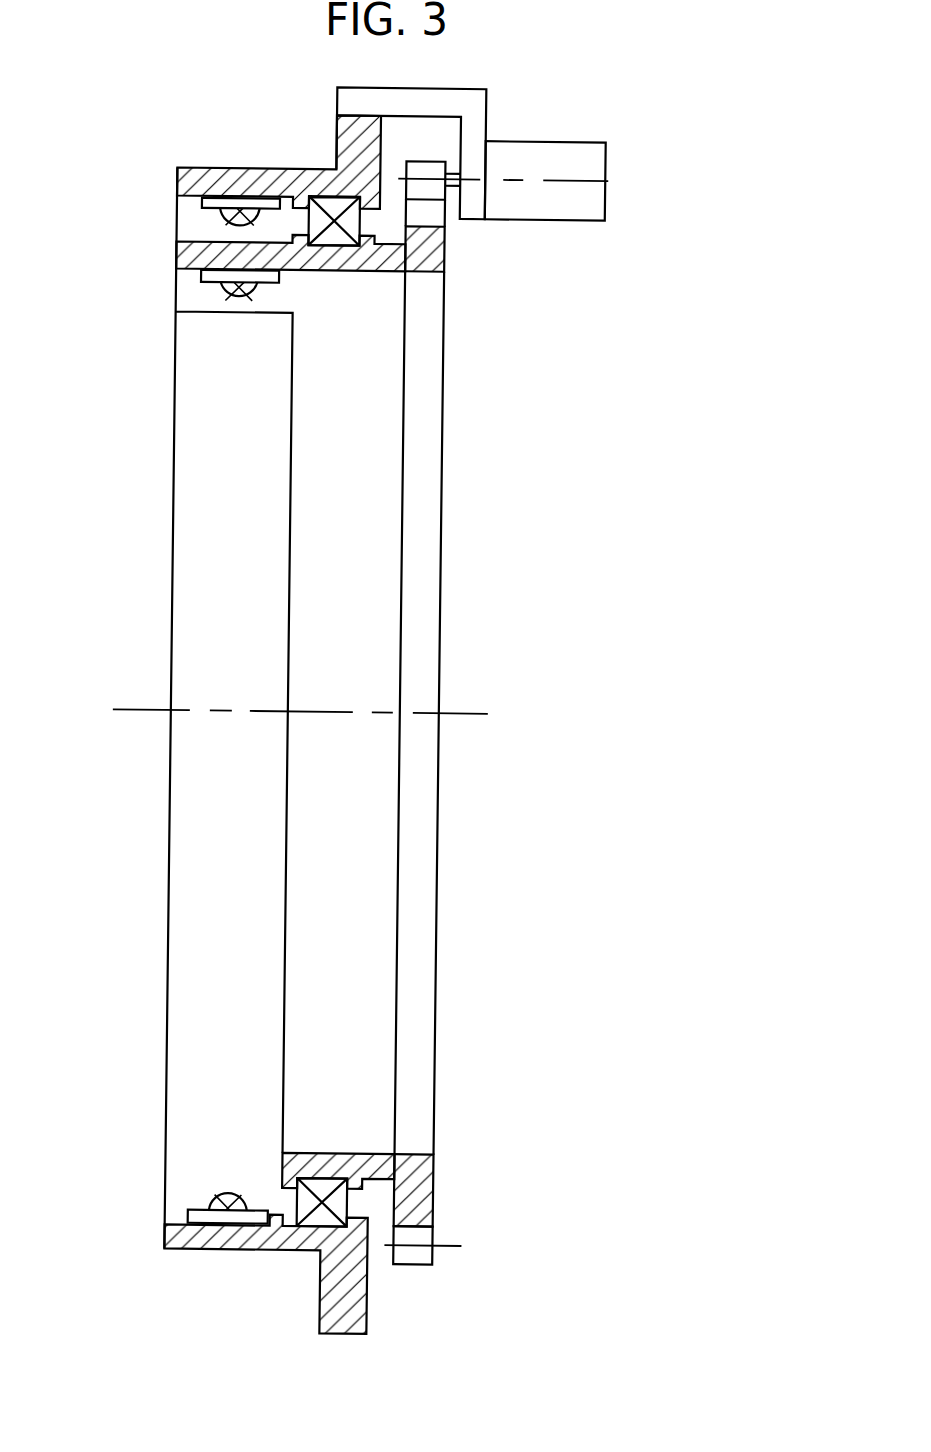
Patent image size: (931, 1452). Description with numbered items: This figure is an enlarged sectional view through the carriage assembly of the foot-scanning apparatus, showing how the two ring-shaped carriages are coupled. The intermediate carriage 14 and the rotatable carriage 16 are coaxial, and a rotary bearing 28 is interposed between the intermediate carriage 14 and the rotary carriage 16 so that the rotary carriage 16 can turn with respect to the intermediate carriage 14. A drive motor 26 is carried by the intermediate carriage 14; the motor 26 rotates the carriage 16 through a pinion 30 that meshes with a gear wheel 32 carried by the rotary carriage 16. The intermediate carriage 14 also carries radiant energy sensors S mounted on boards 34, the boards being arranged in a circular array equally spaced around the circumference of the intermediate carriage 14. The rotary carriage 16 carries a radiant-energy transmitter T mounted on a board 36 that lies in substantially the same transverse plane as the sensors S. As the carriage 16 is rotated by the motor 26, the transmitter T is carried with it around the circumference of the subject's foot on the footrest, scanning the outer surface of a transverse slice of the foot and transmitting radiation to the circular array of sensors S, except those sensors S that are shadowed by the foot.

The intermediate carriage 14 is at (368, 126).
The rotatable carriage 16 is at (195, 255).
The drive motor 26 is at (608, 178).
The rotary bearing 28 is at (355, 215).
The pinion 30 is at (432, 170).
The gear wheel 32 is at (433, 248).
The boards 34 is at (203, 203).
The board 36 is at (204, 275).
The radiant energy sensors S is at (218, 221).
The radiant-energy transmitter T is at (236, 307).